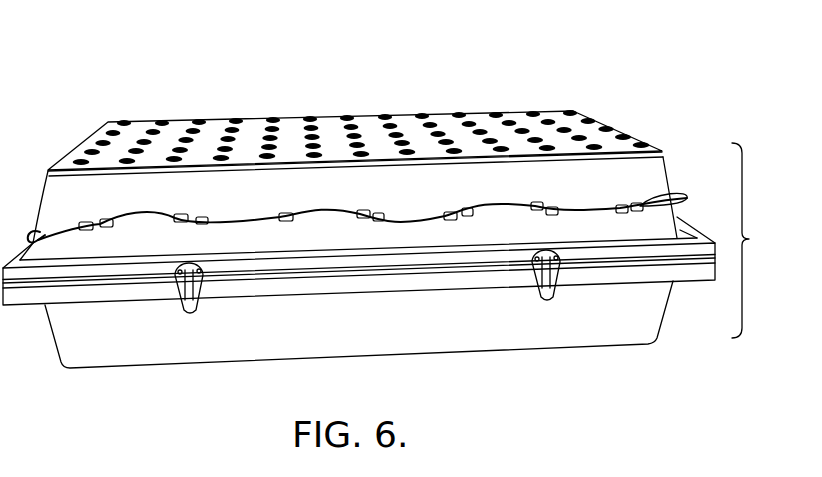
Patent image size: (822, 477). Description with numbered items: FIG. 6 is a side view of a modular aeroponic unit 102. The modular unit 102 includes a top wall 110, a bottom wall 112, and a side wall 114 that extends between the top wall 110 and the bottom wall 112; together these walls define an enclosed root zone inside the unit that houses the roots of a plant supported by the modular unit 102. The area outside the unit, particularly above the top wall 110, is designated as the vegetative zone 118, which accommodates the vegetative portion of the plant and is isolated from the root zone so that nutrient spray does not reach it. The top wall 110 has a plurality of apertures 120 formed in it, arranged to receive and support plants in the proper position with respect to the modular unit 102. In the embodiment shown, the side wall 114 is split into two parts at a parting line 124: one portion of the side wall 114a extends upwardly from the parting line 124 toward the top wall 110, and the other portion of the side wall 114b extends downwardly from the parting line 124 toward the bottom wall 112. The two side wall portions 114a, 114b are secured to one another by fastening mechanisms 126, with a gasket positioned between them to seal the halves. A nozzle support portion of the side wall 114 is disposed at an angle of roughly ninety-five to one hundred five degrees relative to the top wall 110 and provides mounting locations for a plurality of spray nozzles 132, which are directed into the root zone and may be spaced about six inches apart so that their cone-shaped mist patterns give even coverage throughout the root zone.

The modular unit 102 is at (119, 79).
The top wall 110 is at (217, 133).
The bottom wall 112 is at (397, 355).
The side wall 114 is at (760, 240).
The side wall portion 114a is at (378, 180).
The side wall portion 114b is at (143, 322).
The vegetative zone 118 is at (316, 52).
The apertures 120 is at (508, 126).
The parting line 124 is at (355, 280).
The fastening mechanisms 126 is at (200, 308).
The spray nozzles 132 is at (190, 216).